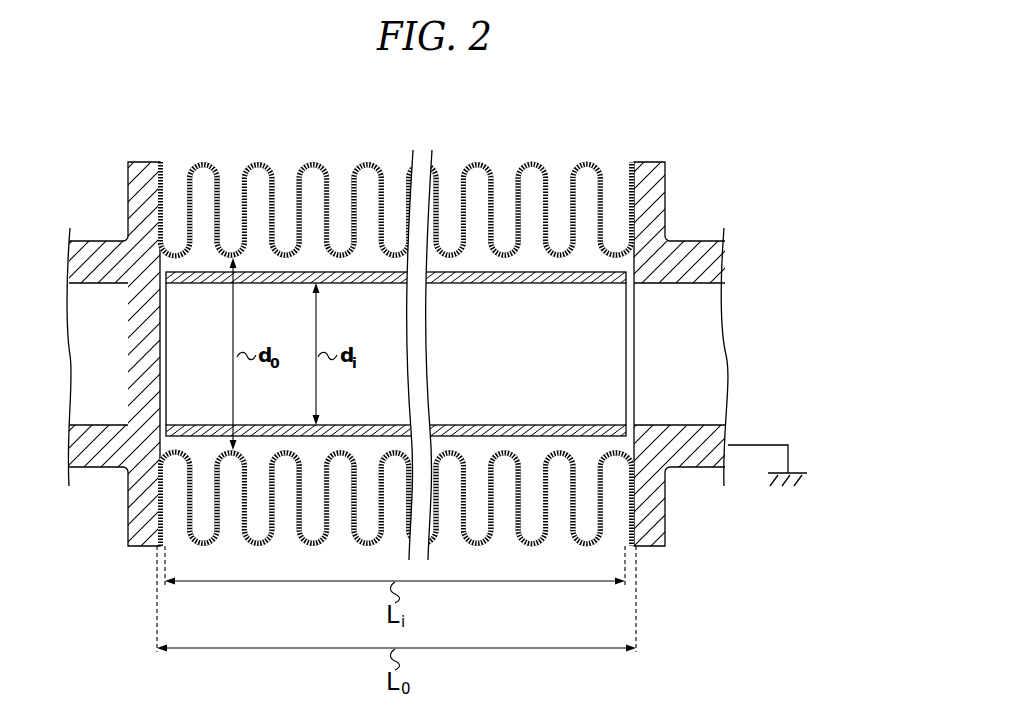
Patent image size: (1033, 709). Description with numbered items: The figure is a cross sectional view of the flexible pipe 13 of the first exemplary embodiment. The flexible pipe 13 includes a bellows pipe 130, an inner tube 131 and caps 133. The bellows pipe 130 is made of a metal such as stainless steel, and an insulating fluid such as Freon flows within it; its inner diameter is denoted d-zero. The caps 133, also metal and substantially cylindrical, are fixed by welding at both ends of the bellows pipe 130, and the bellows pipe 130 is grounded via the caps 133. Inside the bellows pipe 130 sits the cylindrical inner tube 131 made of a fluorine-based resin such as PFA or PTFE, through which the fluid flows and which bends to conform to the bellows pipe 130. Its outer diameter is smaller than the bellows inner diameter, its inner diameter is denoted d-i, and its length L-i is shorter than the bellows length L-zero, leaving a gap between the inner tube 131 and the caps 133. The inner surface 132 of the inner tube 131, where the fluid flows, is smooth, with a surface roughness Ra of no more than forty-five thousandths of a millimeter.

The flexible pipe 13 is at (127, 133).
The bellows pipe 130 is at (587, 162).
The inner tube 131 is at (588, 284).
The inner surface 132 is at (588, 424).
The caps 133 is at (94, 241).